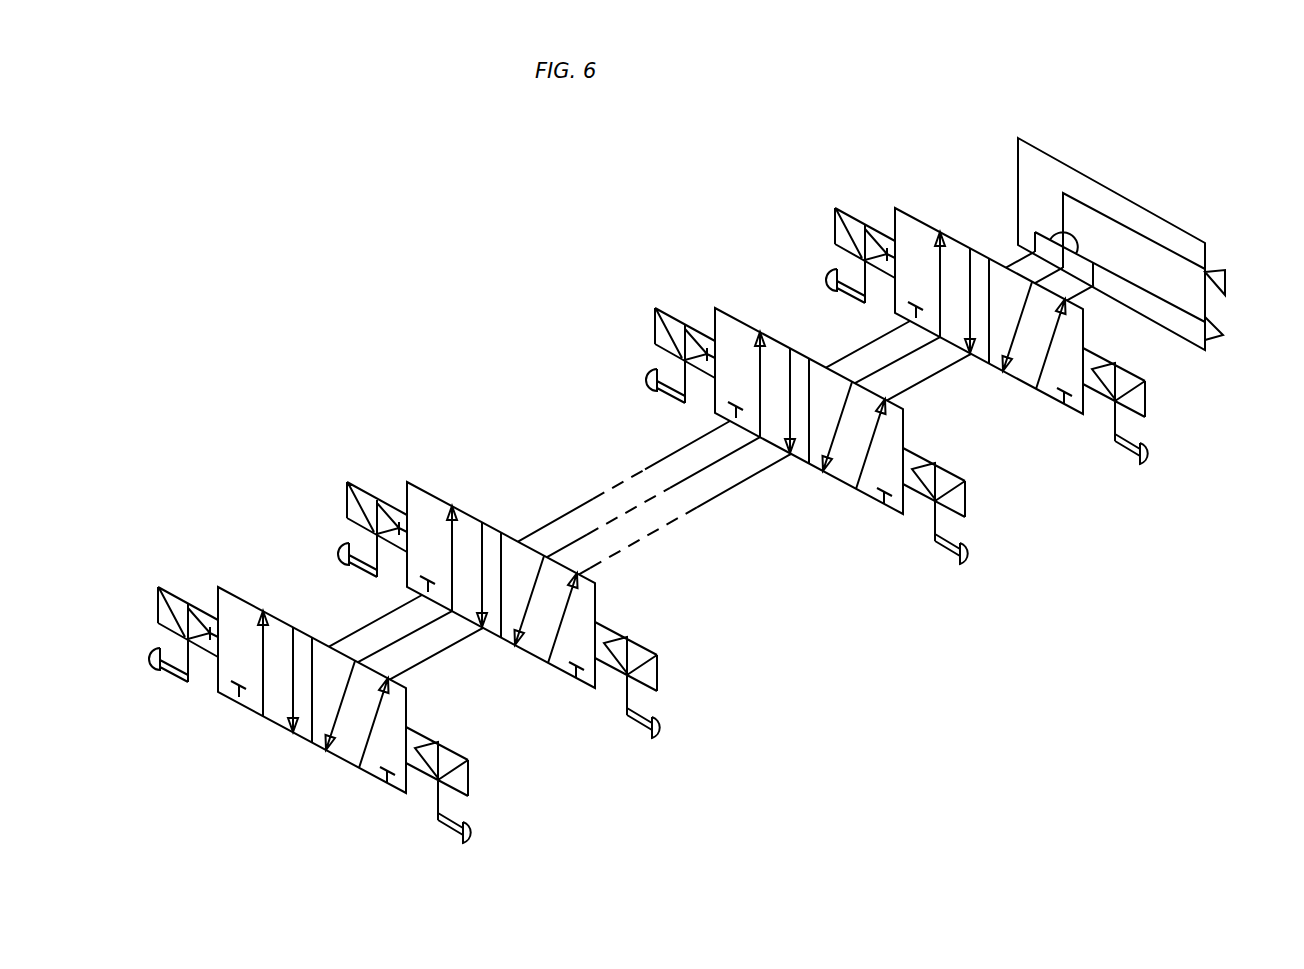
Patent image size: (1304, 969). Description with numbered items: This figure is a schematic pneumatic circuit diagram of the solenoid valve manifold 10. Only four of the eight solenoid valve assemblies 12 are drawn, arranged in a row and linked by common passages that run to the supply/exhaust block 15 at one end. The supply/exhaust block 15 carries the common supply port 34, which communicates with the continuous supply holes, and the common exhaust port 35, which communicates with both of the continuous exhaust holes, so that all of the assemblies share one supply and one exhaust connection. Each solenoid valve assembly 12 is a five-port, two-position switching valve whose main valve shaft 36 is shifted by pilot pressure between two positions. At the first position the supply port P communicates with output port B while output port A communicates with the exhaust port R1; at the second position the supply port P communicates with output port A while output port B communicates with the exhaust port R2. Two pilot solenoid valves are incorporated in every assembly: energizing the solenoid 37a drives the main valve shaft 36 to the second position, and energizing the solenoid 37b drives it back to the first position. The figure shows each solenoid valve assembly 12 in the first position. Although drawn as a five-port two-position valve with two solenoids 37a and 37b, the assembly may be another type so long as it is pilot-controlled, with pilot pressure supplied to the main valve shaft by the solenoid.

The solenoid valve manifold 10 is at (986, 118).
The solenoid valve assembly 12 is at (646, 465).
The supply/exhaust block 15 is at (1039, 160).
The common supply port 34 is at (1225, 282).
The common exhaust port 35 is at (1224, 332).
The main valve shaft 36 is at (696, 561).
The solenoid 37a is at (518, 419).
The solenoid 37b is at (817, 595).
The supply port P is at (594, 507).
The exhaust port R1 is at (626, 527).
The exhaust port R2 is at (553, 531).